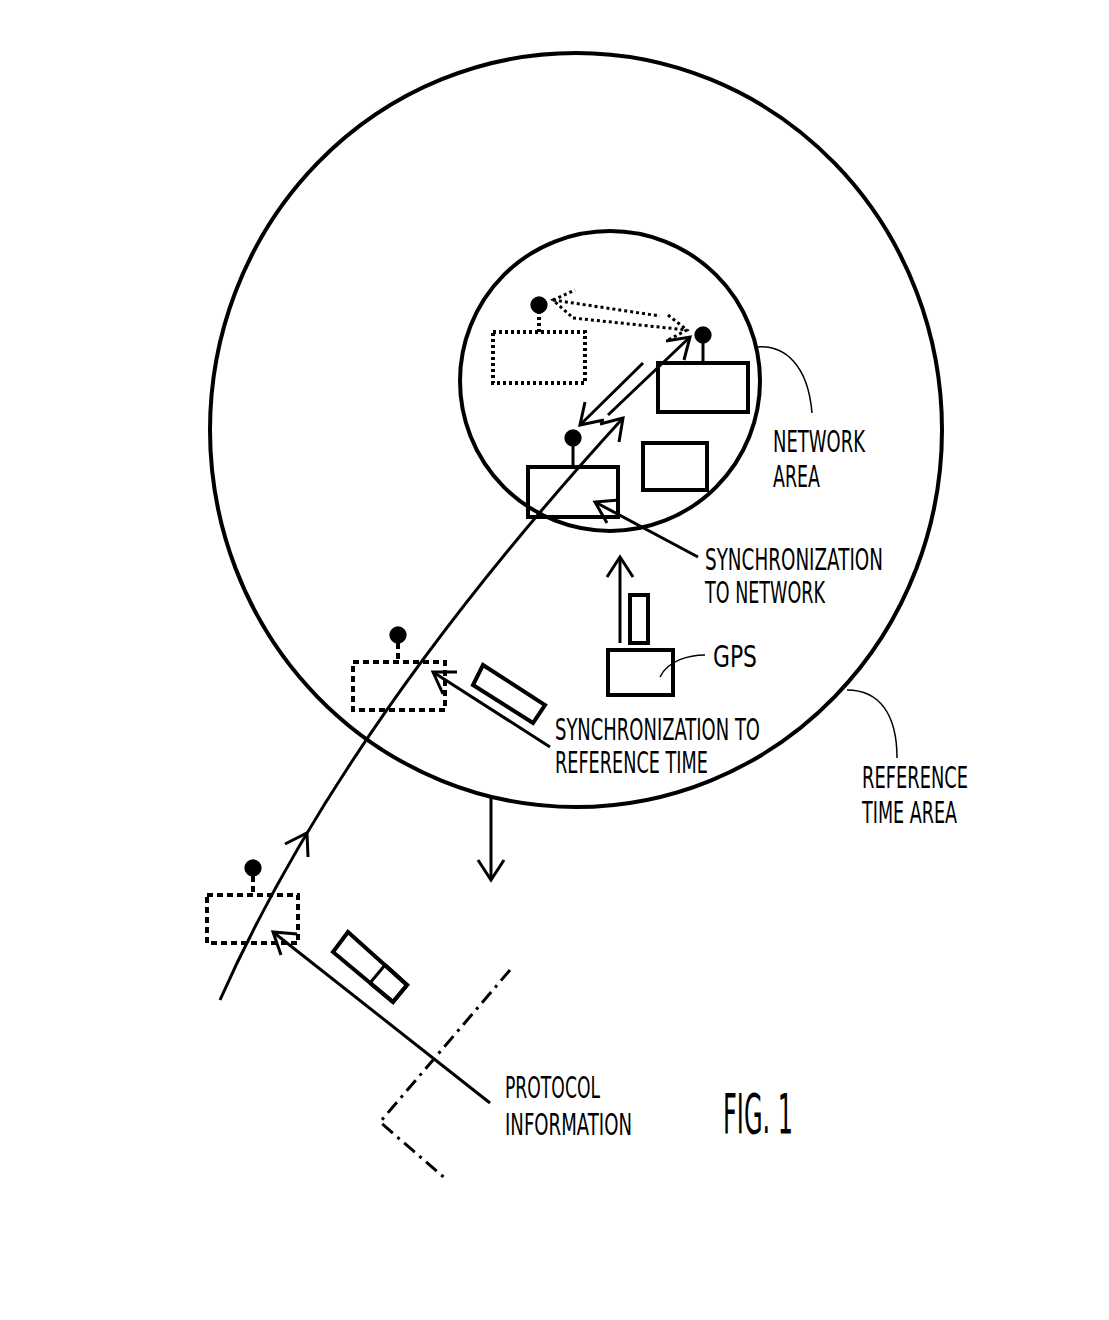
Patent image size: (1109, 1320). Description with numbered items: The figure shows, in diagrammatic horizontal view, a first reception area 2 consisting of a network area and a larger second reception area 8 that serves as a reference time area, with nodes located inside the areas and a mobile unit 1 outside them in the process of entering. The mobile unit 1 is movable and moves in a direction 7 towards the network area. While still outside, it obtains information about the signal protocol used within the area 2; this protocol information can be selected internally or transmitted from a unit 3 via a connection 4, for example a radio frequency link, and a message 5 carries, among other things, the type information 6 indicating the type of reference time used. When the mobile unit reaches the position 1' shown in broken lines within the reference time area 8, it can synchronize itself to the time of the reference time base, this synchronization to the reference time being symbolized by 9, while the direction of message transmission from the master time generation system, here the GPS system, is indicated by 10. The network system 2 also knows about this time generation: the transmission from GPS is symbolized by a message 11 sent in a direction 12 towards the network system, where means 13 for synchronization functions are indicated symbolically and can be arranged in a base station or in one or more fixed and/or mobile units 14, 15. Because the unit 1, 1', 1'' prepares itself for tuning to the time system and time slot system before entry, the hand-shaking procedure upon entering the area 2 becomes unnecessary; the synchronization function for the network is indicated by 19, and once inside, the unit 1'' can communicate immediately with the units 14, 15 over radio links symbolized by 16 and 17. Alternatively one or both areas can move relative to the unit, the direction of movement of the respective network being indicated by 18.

The mobile unit 1 is at (223, 901).
The mobile unit position within reference time area 1' is at (376, 668).
The mobile unit position within network area 1'' is at (557, 473).
The first reception area 2 is at (461, 380).
The unit 3 is at (428, 1128).
The connection 4 is at (340, 985).
The message 5 is at (363, 950).
The type information 6 is at (390, 978).
The direction of movement 7 is at (312, 835).
The reference time area 8 is at (265, 632).
The synchronization to reference time 9 is at (510, 690).
The direction of message transmission 10 is at (497, 716).
The message 11 is at (652, 618).
The direction 12 is at (618, 606).
The means for synchronization functions 13 is at (690, 472).
The unit 14 is at (712, 385).
The unit 15 is at (515, 350).
The radio link 16 is at (643, 365).
The radio link 17 is at (611, 308).
The direction of movement of the network 18 is at (491, 860).
The synchronization function for the network 19 is at (668, 543).